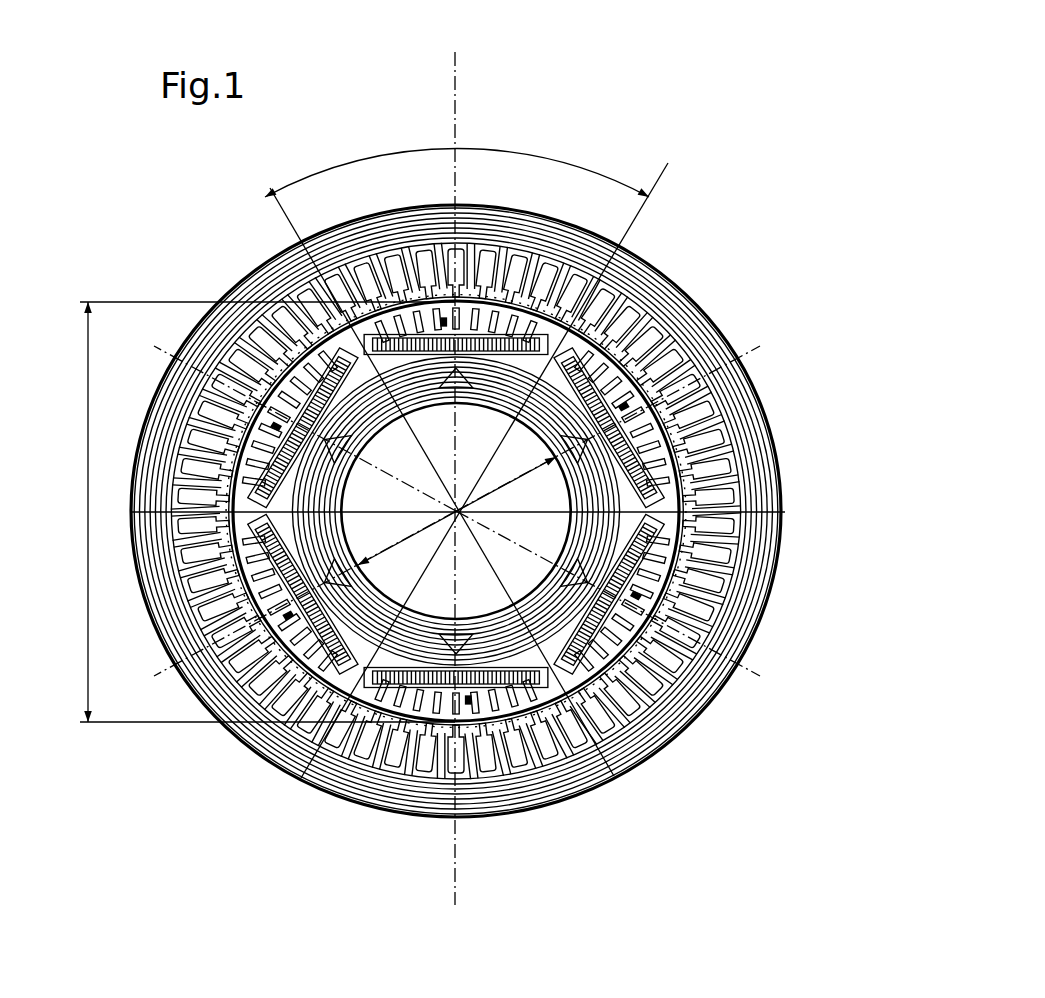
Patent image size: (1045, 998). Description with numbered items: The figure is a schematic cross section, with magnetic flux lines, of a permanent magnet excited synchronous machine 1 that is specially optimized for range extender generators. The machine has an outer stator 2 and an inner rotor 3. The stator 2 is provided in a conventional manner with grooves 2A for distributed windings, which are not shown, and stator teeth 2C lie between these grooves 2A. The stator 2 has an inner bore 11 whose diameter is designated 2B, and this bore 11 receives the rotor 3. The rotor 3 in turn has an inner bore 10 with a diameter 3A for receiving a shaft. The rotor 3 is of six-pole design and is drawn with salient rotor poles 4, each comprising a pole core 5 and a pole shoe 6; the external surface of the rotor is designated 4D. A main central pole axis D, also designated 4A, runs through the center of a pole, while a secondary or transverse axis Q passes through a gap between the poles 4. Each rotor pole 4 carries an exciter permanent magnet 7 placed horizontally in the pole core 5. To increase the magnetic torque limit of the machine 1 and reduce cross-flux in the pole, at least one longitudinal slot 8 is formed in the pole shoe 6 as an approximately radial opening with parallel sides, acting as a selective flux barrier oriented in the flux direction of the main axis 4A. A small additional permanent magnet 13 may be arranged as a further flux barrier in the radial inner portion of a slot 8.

The permanent magnet excited synchronous machine 1 is at (637, 72).
The stator 2 is at (456, 507).
The grooves 2A is at (518, 511).
The diameter of the inner bore of the stator 2B is at (88, 485).
The stator teeth 2C is at (512, 511).
The rotor 3 is at (513, 495).
The diameter of the rotor inner bore 3A is at (437, 522).
The salient rotor poles 4 is at (518, 153).
The main central pole axis 4A is at (467, 215).
The external surface of the rotor 4D is at (501, 552).
The pole core 5 is at (456, 511).
The pole shoe 6 is at (456, 455).
The exciter permanent magnet 7 is at (184, 715).
The longitudinal slot 8 is at (383, 765).
The inner bore of the rotor 10 is at (455, 511).
The inner bore of the stator 11 is at (685, 619).
The additional permanent magnet 13 is at (600, 778).
The main central pole axis D is at (456, 66).
The transverse axis Q is at (645, 202).